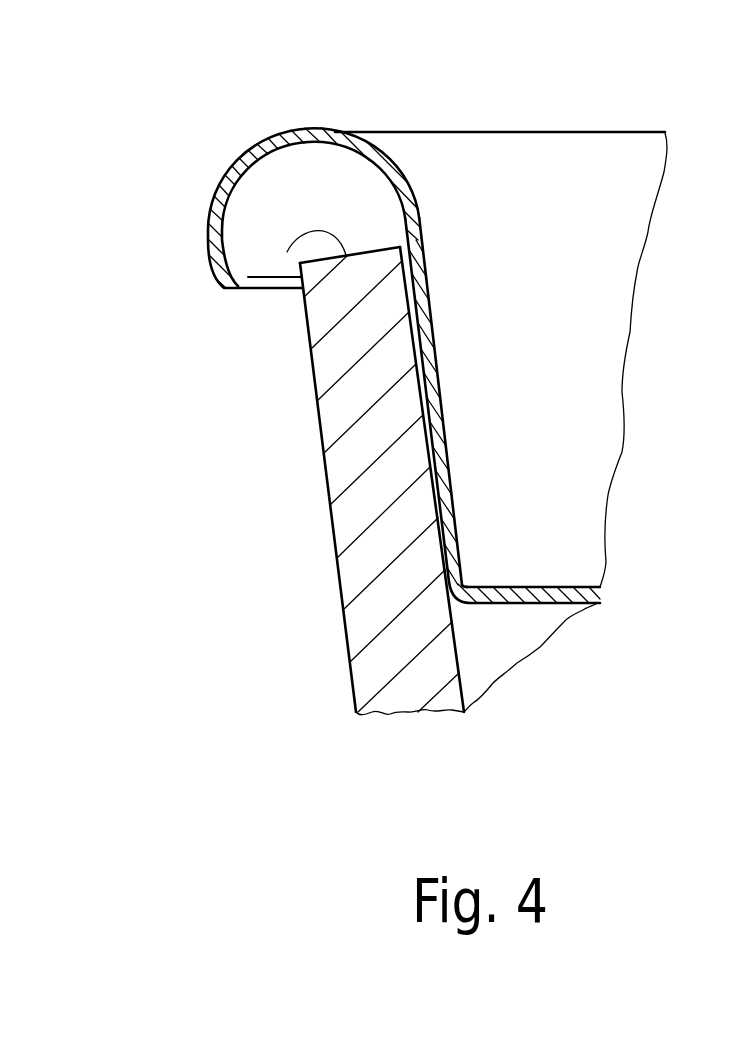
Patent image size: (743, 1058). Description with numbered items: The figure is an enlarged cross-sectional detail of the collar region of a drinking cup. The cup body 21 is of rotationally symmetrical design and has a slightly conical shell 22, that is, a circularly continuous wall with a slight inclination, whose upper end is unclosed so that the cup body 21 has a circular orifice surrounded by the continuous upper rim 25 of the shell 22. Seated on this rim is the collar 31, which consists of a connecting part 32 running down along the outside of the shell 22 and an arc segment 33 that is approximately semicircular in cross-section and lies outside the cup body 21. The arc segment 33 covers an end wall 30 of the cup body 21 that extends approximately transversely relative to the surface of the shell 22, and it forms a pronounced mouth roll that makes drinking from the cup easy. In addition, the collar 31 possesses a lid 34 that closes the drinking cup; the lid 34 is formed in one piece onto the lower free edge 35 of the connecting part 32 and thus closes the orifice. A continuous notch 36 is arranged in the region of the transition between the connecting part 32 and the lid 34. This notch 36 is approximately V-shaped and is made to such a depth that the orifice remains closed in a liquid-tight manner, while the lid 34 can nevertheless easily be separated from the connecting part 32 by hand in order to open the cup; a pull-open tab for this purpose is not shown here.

The cup body 21 is at (268, 622).
The shell 22 is at (370, 660).
The upper rim 25 is at (323, 317).
The end wall 30 is at (287, 252).
The collar 31 is at (205, 160).
The connecting part 32 is at (443, 443).
The arc segment 33 is at (313, 138).
The lid 34 is at (560, 597).
The lower free edge 35 is at (447, 594).
The notch 36 is at (473, 577).